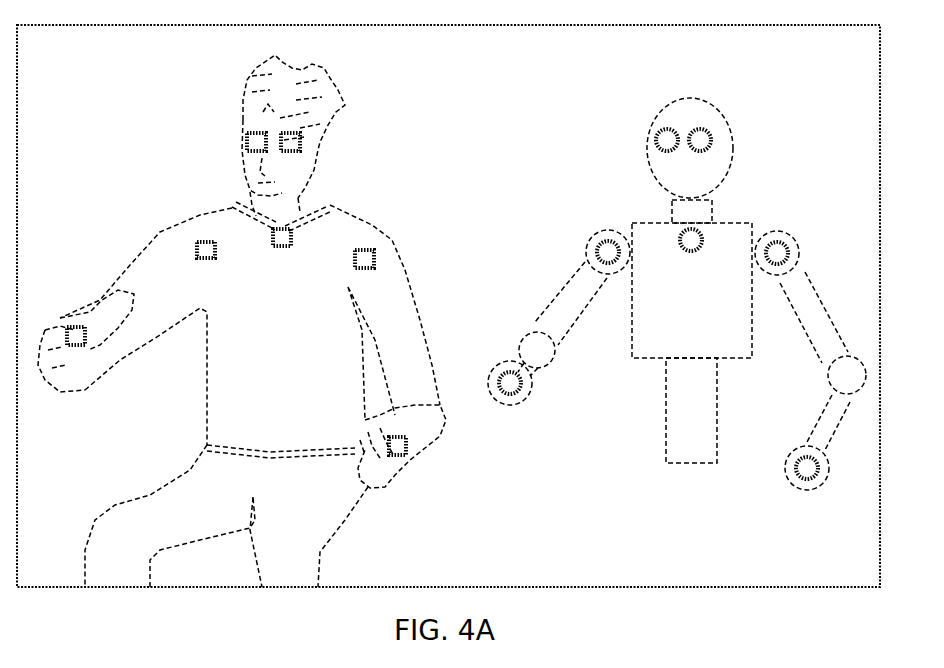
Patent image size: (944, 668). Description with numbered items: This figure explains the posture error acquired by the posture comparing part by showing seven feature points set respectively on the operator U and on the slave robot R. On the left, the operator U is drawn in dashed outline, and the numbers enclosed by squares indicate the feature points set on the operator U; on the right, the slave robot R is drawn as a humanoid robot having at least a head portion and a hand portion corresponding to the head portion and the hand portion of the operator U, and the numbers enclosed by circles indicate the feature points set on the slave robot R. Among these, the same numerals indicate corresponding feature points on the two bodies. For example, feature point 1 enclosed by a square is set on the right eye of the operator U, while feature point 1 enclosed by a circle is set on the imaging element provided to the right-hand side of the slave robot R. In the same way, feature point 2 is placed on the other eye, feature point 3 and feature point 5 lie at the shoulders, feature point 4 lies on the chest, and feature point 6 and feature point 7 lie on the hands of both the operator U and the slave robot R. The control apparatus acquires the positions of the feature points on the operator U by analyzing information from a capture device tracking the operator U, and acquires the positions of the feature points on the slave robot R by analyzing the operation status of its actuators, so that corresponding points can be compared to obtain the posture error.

The operator U is at (345, 98).
The slave robot R is at (697, 98).
The feature point 1 is at (462, 140).
The feature point 2 is at (496, 140).
The feature point 3 is at (408, 252).
The feature point 4 is at (487, 240).
The feature point 5 is at (571, 255).
The feature point 6 is at (294, 360).
The feature point 7 is at (603, 458).